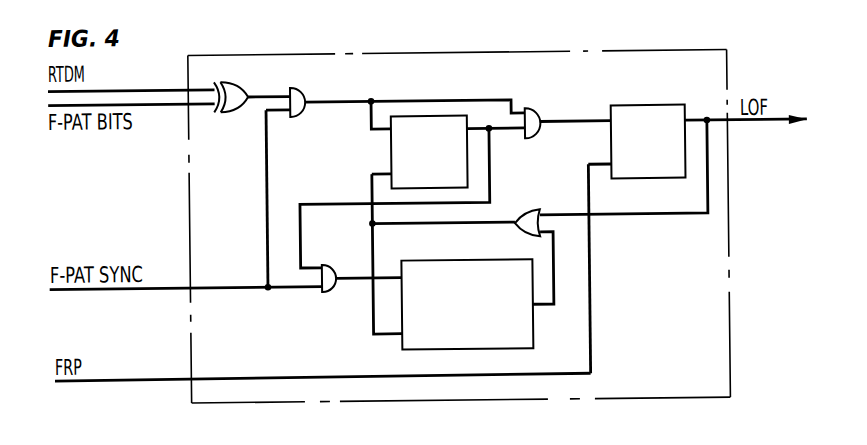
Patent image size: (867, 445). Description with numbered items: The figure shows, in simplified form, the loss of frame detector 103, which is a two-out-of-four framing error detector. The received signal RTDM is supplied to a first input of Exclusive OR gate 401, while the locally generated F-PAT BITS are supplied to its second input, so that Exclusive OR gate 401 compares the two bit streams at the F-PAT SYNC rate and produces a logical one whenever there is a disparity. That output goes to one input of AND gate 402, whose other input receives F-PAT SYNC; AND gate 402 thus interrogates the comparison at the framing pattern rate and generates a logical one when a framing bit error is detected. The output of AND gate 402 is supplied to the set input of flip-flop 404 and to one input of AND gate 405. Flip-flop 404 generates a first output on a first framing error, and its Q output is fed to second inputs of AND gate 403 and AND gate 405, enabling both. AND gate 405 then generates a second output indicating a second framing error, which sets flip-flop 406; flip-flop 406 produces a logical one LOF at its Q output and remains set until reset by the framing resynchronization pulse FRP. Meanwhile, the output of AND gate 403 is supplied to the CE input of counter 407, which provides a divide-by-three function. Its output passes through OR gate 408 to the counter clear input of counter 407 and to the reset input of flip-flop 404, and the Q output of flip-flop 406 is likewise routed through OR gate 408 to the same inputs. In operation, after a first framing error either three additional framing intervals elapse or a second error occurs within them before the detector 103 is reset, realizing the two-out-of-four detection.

The loss of frame detector 103 is at (623, 32).
The Exclusive OR gate 401 is at (234, 68).
The AND gate 402 is at (308, 111).
The AND gate 403 is at (323, 265).
The flip-flop 404 is at (392, 151).
The AND gate 405 is at (538, 96).
The flip-flop 406 is at (648, 108).
The counter 407 is at (532, 336).
The OR gate 408 is at (533, 213).